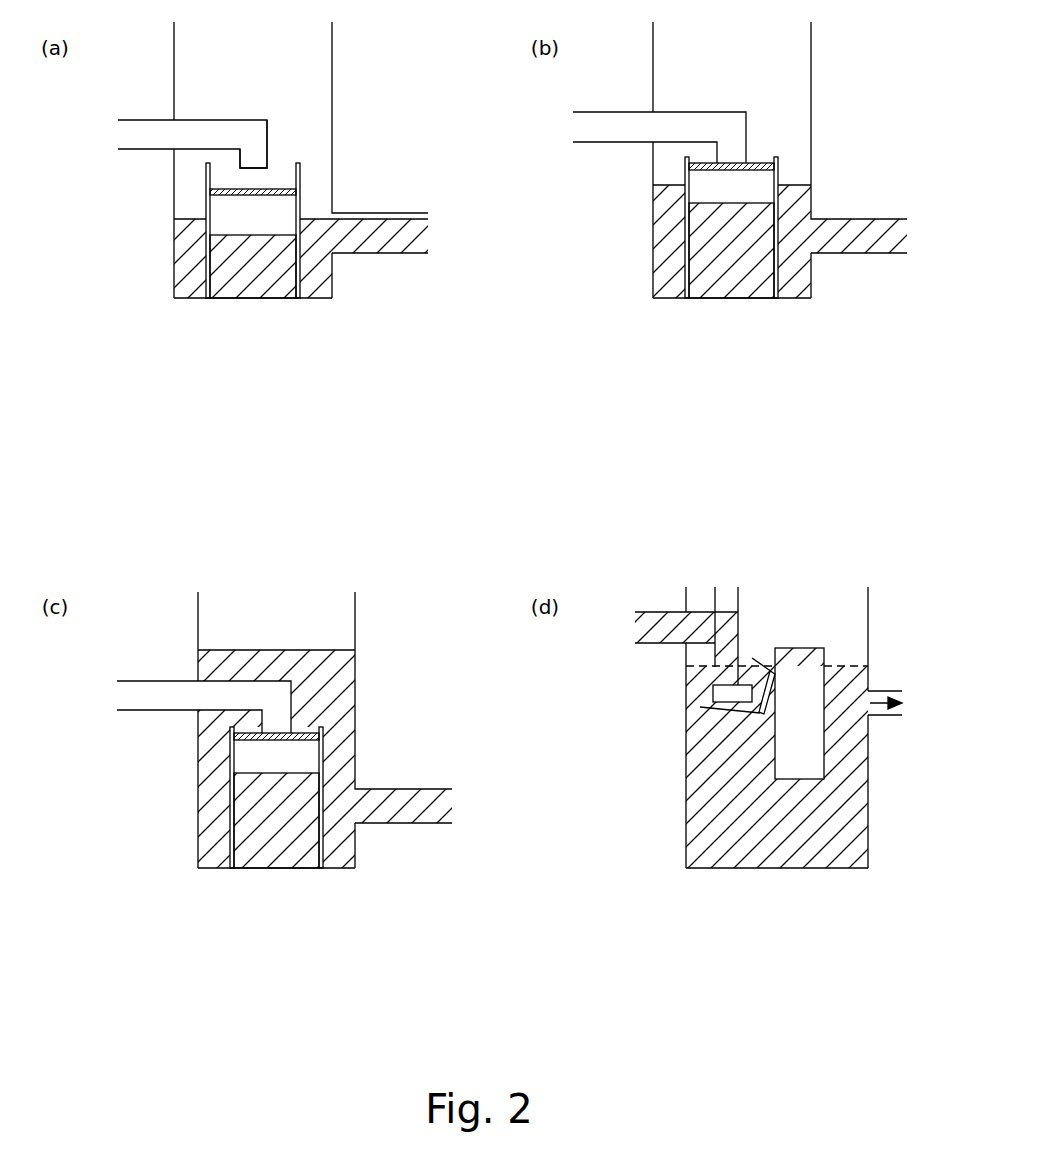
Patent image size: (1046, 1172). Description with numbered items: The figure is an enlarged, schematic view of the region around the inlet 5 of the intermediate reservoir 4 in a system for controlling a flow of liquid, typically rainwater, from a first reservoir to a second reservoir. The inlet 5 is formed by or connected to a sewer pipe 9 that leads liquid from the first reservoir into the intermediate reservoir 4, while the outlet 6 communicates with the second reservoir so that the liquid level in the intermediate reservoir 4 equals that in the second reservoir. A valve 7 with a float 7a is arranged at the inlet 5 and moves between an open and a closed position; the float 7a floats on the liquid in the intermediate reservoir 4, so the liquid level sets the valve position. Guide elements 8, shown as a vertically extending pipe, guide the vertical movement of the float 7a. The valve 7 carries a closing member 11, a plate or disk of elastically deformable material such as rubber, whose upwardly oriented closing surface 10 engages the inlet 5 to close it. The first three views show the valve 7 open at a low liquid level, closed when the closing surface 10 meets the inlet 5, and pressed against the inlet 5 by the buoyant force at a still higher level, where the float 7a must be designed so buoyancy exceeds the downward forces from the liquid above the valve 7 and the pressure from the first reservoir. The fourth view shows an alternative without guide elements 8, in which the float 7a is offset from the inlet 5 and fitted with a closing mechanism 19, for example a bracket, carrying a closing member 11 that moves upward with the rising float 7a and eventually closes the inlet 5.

The intermediate reservoir 4 is at (332, 53).
The inlet 5 is at (258, 152).
The outlet 6 is at (335, 248).
The valve 7 is at (242, 243).
The float 7a is at (275, 210).
The guide elements 8 is at (300, 280).
The sewer pipe 9 is at (147, 136).
The closing surface 10 is at (226, 187).
The closing member 11 is at (268, 187).
The closing mechanism 19 is at (743, 715).